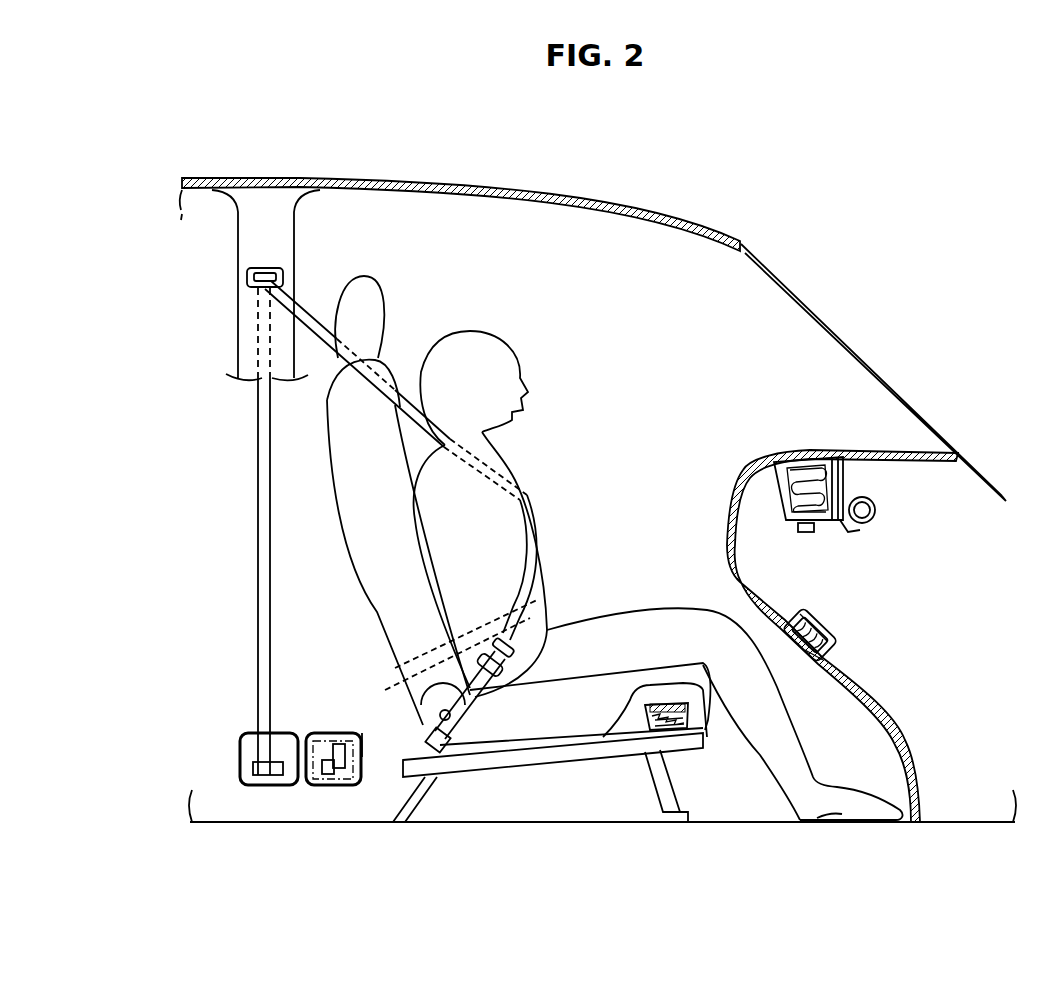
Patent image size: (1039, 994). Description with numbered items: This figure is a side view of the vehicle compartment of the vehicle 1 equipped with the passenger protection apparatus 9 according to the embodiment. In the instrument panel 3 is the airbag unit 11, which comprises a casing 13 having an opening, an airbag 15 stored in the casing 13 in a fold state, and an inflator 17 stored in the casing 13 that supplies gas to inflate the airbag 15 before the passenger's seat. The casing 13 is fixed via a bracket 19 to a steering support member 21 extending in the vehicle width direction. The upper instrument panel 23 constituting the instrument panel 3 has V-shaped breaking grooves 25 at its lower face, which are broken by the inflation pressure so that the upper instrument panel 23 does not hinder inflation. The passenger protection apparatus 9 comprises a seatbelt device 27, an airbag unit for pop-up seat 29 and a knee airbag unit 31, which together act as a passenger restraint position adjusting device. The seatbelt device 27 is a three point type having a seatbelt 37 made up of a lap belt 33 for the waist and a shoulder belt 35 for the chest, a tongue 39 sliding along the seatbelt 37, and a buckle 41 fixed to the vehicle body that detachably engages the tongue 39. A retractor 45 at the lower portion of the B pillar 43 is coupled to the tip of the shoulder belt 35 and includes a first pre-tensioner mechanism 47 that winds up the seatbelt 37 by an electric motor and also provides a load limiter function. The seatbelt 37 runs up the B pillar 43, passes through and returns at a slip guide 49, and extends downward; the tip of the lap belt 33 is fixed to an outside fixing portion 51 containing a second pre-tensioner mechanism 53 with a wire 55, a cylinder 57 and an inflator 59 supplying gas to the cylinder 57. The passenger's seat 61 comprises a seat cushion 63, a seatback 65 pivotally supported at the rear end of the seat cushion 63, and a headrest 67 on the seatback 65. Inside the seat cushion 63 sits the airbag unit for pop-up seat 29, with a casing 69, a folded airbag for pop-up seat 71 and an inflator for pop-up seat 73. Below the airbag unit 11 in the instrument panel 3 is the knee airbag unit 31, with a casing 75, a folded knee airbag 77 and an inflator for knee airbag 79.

The vehicle 1 is at (497, 176).
The instrument panel 3 is at (813, 598).
The passenger protection apparatus 9 is at (590, 382).
The airbag unit 11 is at (760, 496).
The casing 13 is at (784, 500).
The airbag 15 is at (840, 482).
The inflator 17 is at (813, 530).
The bracket 19 is at (828, 527).
The steering support member 21 is at (877, 510).
The upper instrument panel 23 is at (860, 450).
The breaking grooves 25 is at (815, 460).
The seatbelt device 27 is at (240, 628).
The airbag unit for pop-up seat 29 is at (620, 752).
The knee airbag unit 31 is at (852, 630).
The lap belt 33 is at (553, 597).
The shoulder belt 35 is at (530, 533).
The seatbelt 37 is at (453, 485).
The tongue 39 is at (573, 627).
The buckle 41 is at (513, 710).
The B pillar 43 is at (257, 243).
The retractor 45 is at (240, 747).
The first pre-tensioner mechanism 47 is at (255, 765).
The slip guide 49 is at (250, 268).
The outside fixing portion 51 is at (313, 735).
The second pre-tensioner mechanism 53 is at (326, 735).
The wire 55 is at (362, 743).
The cylinder 57 is at (347, 753).
The inflator 59 is at (325, 767).
The passenger's seat 61 is at (418, 510).
The seat cushion 63 is at (435, 665).
The seatback 65 is at (373, 478).
The headrest 67 is at (360, 311).
The casing 69 is at (676, 679).
The airbag for pop-up seat 71 is at (702, 713).
The inflator for pop-up seat 73 is at (628, 717).
The casing 75 is at (803, 612).
The knee airbag 77 is at (836, 652).
The inflator for knee airbag 79 is at (828, 620).